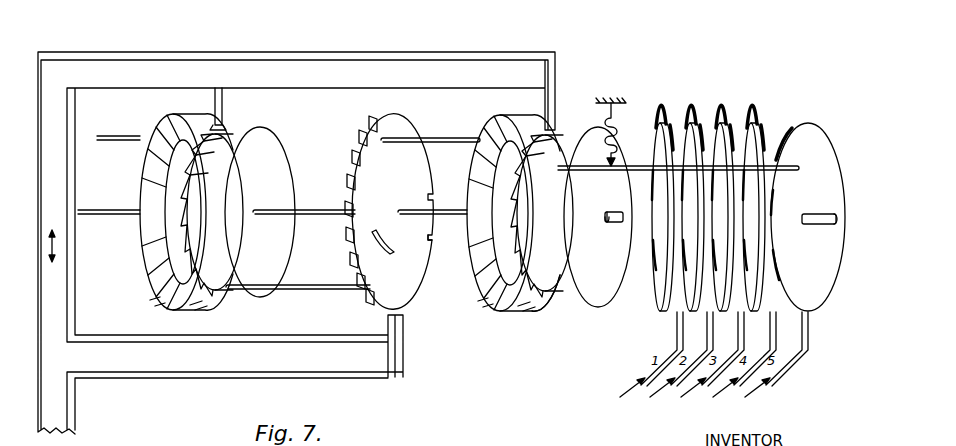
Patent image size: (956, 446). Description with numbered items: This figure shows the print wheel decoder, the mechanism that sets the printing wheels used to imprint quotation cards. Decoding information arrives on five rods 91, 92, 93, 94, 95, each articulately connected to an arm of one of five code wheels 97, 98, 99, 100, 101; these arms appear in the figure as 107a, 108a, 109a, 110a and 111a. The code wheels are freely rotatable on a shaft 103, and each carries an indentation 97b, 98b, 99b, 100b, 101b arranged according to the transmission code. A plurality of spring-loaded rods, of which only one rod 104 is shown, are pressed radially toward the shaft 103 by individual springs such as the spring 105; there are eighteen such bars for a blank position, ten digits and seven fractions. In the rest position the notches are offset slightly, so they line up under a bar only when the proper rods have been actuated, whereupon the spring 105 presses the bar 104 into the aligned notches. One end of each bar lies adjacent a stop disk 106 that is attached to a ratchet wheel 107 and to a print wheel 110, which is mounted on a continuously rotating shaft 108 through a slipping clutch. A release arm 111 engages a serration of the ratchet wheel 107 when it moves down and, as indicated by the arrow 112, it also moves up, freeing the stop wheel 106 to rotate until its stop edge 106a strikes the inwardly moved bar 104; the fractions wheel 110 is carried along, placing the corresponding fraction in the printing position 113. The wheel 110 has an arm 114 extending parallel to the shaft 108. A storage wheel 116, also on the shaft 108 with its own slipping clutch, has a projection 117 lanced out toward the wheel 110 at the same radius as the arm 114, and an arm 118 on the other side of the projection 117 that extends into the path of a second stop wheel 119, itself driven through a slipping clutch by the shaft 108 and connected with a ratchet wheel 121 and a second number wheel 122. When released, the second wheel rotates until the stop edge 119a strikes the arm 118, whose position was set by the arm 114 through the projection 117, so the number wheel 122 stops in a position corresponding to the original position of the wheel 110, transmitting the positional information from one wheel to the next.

The rod 91 is at (644, 374).
The rod 92 is at (670, 388).
The rod 93 is at (708, 388).
The rod 94 is at (745, 388).
The rod 95 is at (776, 380).
The code wheel 97 is at (658, 293).
The code wheel 98 is at (677, 312).
The code wheel 99 is at (711, 248).
The code wheel 100 is at (743, 265).
The code wheel 101 is at (812, 302).
The indentation 97b is at (665, 122).
The indentation 98b is at (700, 122).
The indentation 99b is at (735, 122).
The indentation 100b is at (775, 122).
The indentation 101b is at (779, 158).
The shaft 103 is at (826, 212).
The spring-loaded rod 104 is at (615, 159).
The spring 105 is at (616, 104).
The stop disk 106 is at (581, 302).
The stop edge 106a is at (628, 171).
The ratchet wheel 107 is at (530, 304).
The contact strip 107a is at (677, 339).
The contact strip 108a is at (707, 336).
The contact strip 109a is at (738, 336).
The contact strip 110a is at (770, 336).
The contact strip 111a is at (808, 342).
The continuously rotating shaft 108 is at (431, 232).
The print wheel 110 is at (482, 288).
The release arm 111 is at (447, 54).
The arrow 112 is at (61, 244).
The printing position 113 is at (474, 203).
The arm 114 is at (418, 139).
The storage wheel 116 is at (404, 183).
The projection 117 is at (384, 254).
The arm 118 is at (349, 284).
The second stop wheel 119 is at (285, 147).
The stop edge 119a is at (235, 156).
The ratchet wheel 121 is at (224, 124).
The number wheel 122 is at (174, 120).